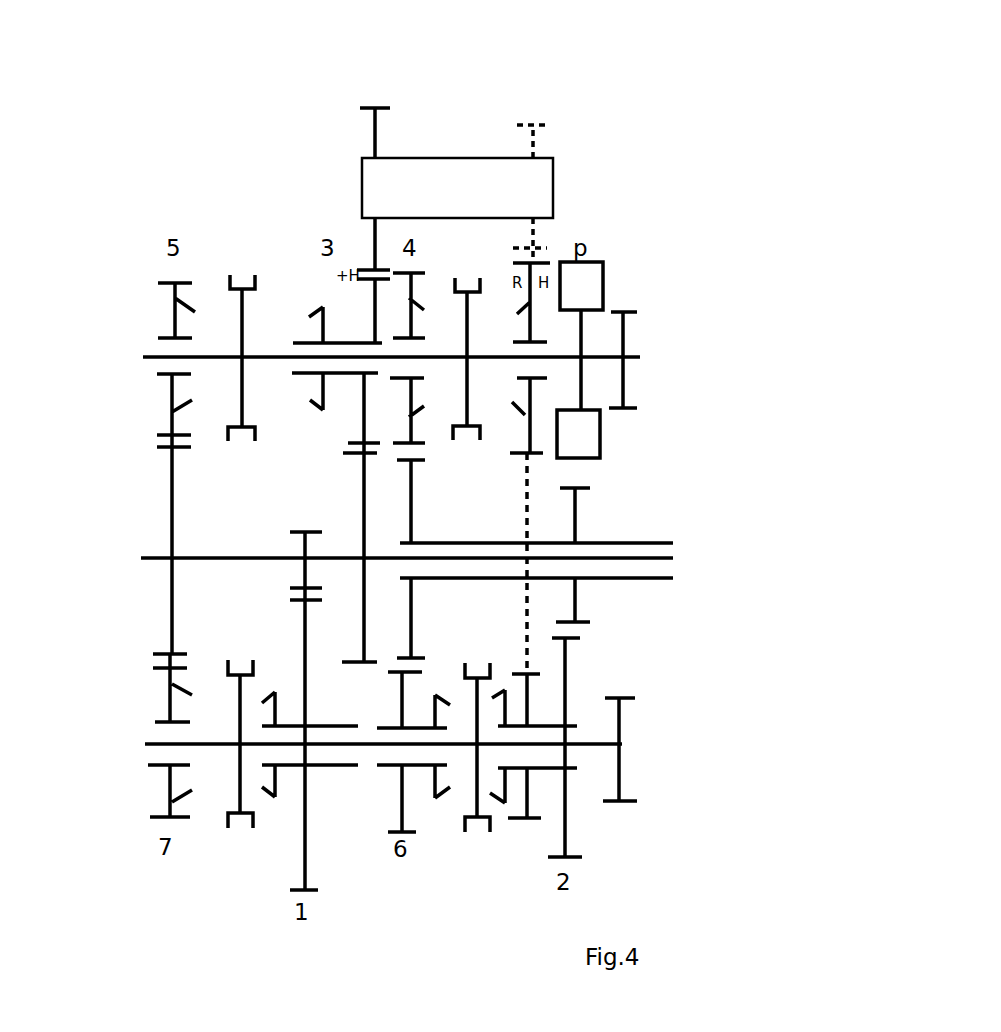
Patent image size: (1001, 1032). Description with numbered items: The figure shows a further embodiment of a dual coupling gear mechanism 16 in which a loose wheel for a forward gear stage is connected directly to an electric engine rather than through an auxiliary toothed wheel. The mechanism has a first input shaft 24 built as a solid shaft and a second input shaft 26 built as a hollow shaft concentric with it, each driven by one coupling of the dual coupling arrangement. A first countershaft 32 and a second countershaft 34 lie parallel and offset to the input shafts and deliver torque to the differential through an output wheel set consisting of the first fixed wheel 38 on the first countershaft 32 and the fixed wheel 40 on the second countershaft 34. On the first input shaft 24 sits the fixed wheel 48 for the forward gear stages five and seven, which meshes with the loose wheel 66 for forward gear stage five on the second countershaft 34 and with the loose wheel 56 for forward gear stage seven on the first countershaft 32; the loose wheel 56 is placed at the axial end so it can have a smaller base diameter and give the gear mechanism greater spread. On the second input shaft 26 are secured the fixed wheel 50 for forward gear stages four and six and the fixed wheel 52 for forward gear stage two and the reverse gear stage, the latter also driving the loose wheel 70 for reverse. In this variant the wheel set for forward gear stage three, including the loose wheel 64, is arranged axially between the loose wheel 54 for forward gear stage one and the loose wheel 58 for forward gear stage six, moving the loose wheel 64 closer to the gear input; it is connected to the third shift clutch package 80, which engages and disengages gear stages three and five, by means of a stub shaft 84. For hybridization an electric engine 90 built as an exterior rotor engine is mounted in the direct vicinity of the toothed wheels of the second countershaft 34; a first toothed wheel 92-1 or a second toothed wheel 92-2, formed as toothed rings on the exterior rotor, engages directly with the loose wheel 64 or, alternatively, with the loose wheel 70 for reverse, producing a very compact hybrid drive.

The dual coupling gear mechanism 16 is at (698, 260).
The first input shaft 24 is at (673, 559).
The second input shaft 26 is at (652, 543).
The first countershaft 32 is at (156, 742).
The second countershaft 34 is at (155, 356).
The first fixed wheel 38 is at (622, 728).
The fixed wheel 40 is at (625, 340).
The third fixed wheel 48 is at (171, 580).
The first fixed wheel 50 is at (412, 505).
The second fixed wheel 52 is at (576, 515).
The loose wheel 54 is at (300, 838).
The loose wheel 56 is at (170, 783).
The loose wheel 58 is at (398, 806).
The loose wheel 64 is at (347, 340).
The loose wheel 66 is at (170, 425).
The loose wheel 70 is at (531, 395).
The third shift clutch package 80 is at (248, 280).
The stub shaft 84 is at (370, 305).
The electric engine 90 is at (458, 178).
The first toothed wheel 92-1 is at (372, 136).
The second toothed wheel 92-2 is at (540, 143).